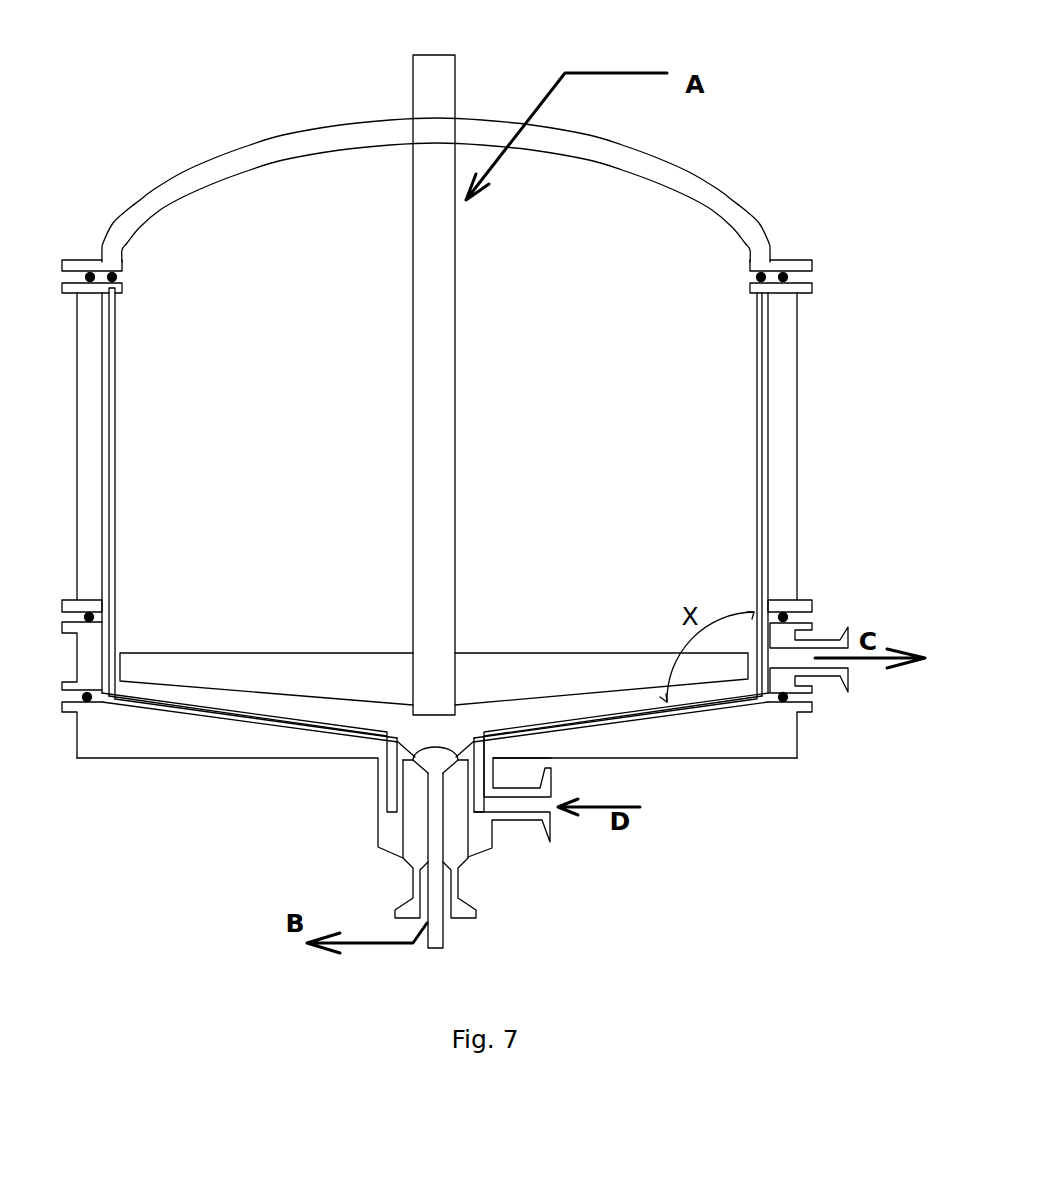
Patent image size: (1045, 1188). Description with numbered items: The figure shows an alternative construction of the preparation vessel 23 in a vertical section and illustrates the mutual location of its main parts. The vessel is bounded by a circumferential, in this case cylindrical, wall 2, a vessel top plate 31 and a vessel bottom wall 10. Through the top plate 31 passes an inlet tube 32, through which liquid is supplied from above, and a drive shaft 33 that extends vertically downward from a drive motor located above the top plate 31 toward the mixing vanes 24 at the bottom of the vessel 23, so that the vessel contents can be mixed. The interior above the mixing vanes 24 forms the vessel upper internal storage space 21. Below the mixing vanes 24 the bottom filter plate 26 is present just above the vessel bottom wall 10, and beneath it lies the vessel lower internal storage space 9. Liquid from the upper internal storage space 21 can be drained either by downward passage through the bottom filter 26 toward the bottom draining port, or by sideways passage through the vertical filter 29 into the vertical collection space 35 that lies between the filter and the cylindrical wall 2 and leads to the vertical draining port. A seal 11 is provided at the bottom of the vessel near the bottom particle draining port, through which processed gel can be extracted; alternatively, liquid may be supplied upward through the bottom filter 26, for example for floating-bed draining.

The vessel 23 is at (118, 88).
The vessel top plate 31 is at (153, 185).
The inlet tube 32 is at (545, 110).
The vertical filter 29 is at (755, 325).
The drive shaft 33 is at (455, 428).
The vessel upper internal storage space 21 is at (436, 496).
The cylindrical housing wall 2 is at (800, 320).
The vertical collection space 35 is at (765, 383).
The mixing vanes 24 is at (225, 650).
The vessel lower internal storage space 9 is at (250, 718).
The bottom filter plate 26 is at (365, 727).
The seal 11 is at (435, 817).
The vessel bottom wall 10 is at (770, 745).